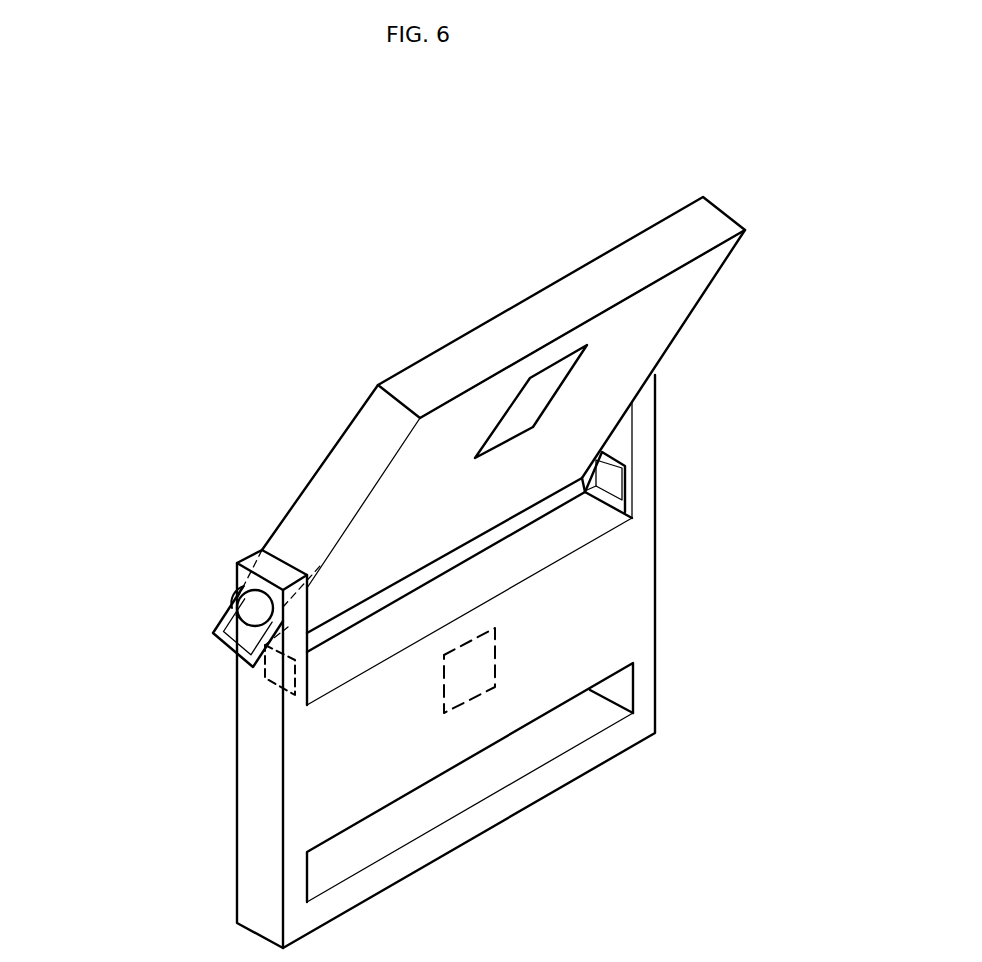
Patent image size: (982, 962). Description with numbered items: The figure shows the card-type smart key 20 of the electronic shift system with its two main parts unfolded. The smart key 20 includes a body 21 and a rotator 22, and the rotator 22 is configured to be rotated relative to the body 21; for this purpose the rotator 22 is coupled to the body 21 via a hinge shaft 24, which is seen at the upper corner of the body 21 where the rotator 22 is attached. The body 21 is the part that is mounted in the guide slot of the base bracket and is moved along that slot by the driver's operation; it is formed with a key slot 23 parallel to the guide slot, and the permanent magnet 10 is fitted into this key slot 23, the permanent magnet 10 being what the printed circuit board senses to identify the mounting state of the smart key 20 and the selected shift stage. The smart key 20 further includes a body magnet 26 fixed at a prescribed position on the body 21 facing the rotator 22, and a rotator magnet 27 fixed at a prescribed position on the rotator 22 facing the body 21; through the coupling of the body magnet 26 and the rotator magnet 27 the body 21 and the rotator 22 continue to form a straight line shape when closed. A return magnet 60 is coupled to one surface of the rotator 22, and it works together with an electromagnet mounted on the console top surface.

The permanent magnet 10 is at (497, 665).
The card-type smart key 20 is at (491, 382).
The body 21 is at (302, 817).
The rotator 22 is at (645, 252).
The key slot 23 is at (472, 786).
The hinge shaft 24 is at (242, 597).
The body magnet 26 is at (213, 633).
The rotator magnet 27 is at (253, 682).
The return magnet 60 is at (538, 380).